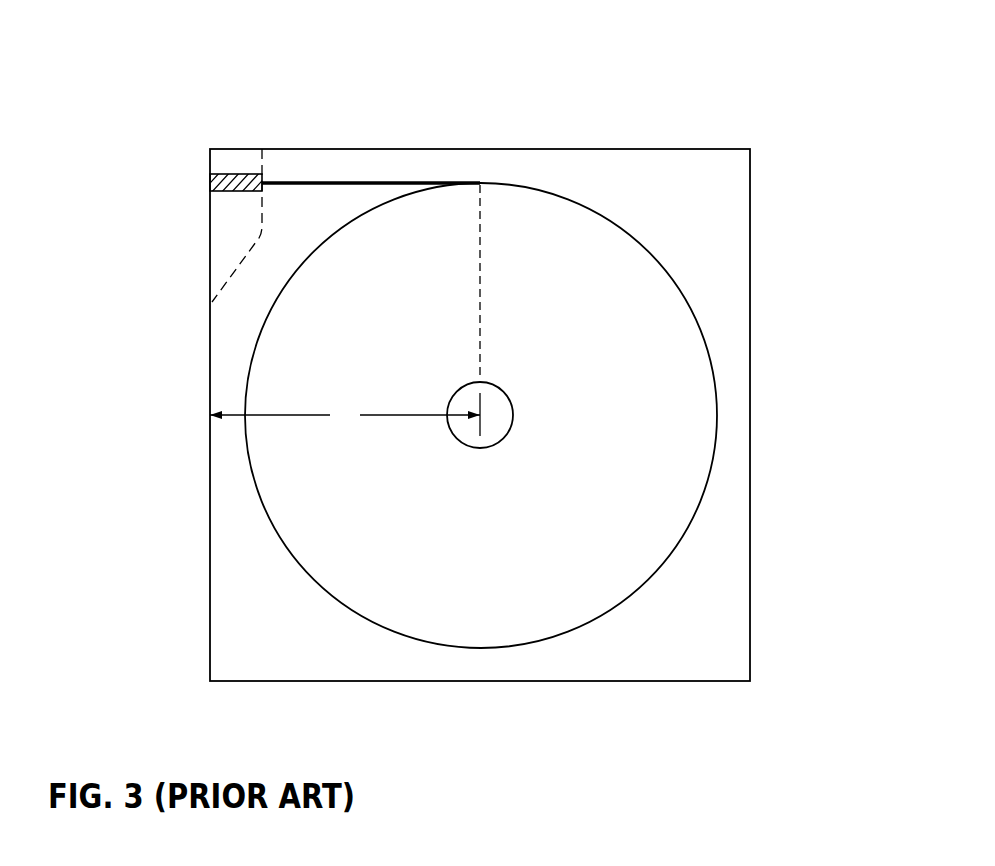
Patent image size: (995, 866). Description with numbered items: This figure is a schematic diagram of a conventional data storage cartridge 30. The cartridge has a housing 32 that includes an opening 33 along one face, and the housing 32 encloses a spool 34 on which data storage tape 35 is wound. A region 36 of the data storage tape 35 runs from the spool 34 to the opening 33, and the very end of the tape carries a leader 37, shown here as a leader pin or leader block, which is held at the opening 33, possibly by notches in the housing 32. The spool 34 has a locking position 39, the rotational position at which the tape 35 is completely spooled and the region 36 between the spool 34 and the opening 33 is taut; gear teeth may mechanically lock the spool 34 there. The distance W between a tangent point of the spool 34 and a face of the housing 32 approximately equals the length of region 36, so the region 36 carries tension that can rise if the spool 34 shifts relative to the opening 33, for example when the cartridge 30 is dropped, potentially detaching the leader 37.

The data storage cartridge 30 is at (245, 67).
The housing 32 is at (733, 232).
The opening 33 is at (190, 233).
The spool 34 is at (683, 380).
The data storage tape 35 is at (717, 433).
The region 36 is at (380, 180).
The leader 37 is at (208, 182).
The locking position 39 is at (483, 248).